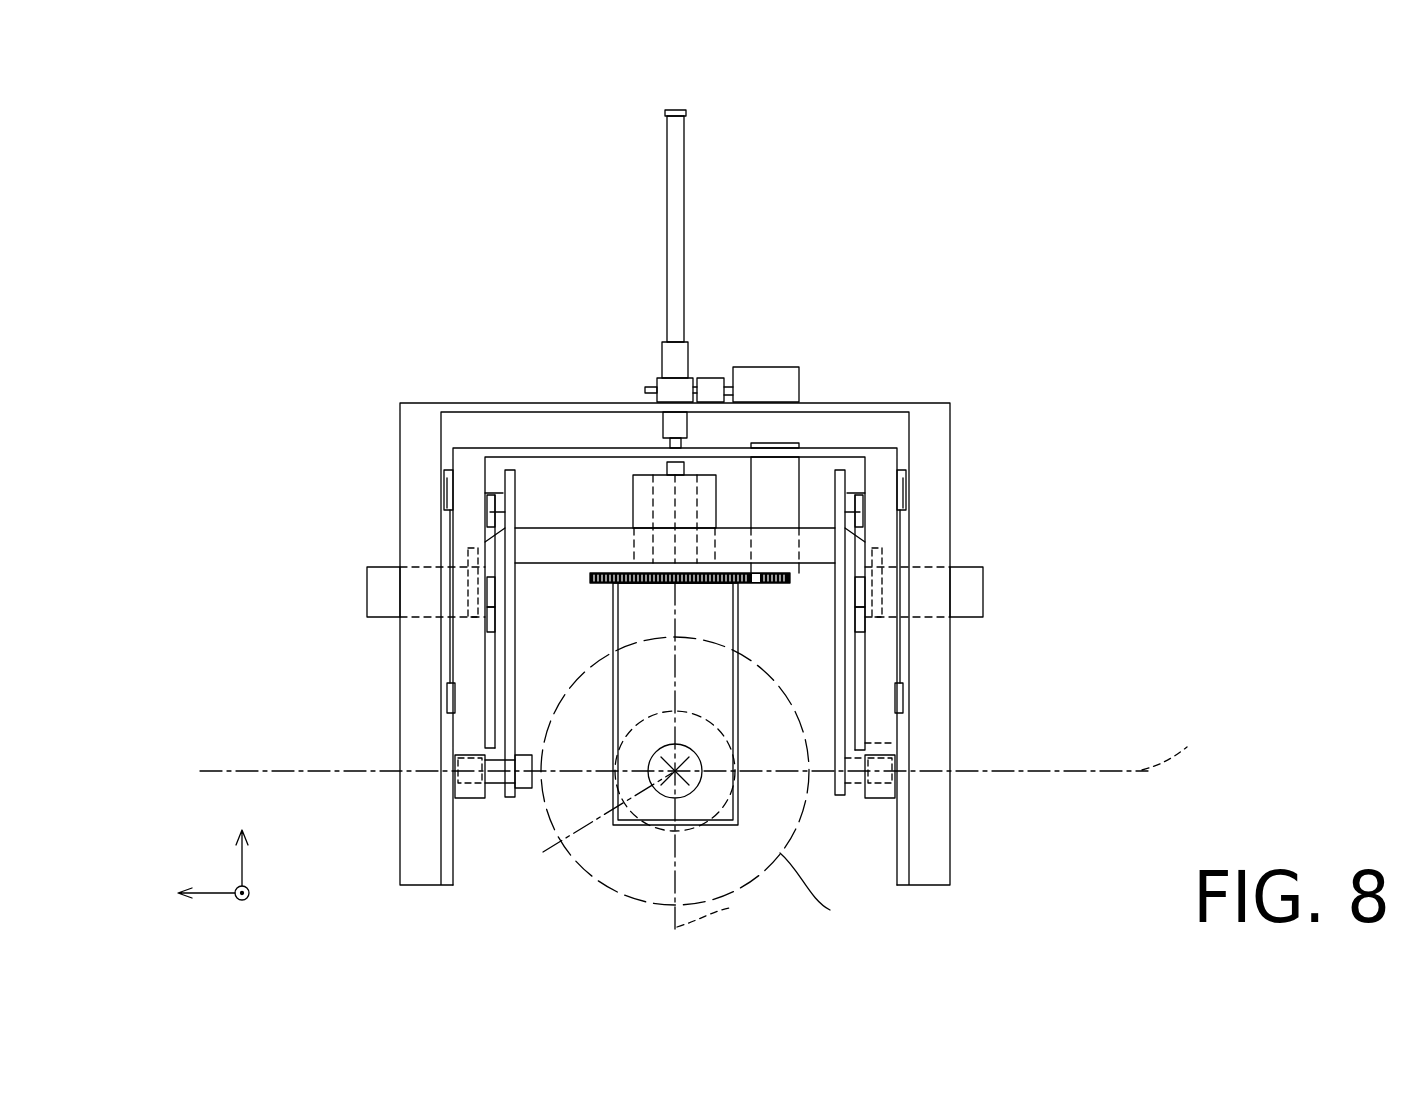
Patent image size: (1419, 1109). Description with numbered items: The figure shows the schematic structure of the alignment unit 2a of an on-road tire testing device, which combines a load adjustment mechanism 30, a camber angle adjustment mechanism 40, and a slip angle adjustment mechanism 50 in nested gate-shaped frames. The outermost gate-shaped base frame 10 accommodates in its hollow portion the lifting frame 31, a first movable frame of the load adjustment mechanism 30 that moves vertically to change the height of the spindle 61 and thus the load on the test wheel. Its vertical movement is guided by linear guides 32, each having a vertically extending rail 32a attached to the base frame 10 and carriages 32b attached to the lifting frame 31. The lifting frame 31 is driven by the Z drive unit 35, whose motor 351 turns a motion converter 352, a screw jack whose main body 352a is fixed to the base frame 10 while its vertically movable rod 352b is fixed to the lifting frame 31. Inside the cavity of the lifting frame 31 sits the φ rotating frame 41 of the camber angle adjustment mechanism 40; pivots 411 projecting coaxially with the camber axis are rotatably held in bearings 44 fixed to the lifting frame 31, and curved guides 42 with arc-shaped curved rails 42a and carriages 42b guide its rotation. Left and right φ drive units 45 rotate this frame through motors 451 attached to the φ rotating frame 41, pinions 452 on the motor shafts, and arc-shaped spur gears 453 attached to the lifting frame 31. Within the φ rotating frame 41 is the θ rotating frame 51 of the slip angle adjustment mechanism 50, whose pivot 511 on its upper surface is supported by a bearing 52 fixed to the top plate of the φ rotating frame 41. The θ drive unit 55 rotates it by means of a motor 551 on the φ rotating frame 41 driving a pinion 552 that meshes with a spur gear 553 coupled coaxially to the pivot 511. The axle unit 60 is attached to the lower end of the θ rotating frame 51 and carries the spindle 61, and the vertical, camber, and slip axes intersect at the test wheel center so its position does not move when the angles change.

The alignment unit 2a is at (976, 210).
The base frame 10 is at (487, 402).
The load adjustment mechanism 30 is at (675, 581).
The lifting frame 31 is at (588, 446).
The linear guide 32 is at (546, 611).
The rail 32a is at (443, 633).
The carriage 32b is at (447, 702).
The Z drive unit 35 is at (767, 279).
The motor 351 is at (760, 367).
The motion converter 352 is at (744, 279).
The main body 352a is at (692, 358).
The rod 352b is at (690, 427).
The camber angle adjustment mechanism 40 is at (537, 690).
The φ rotating frame 41 is at (582, 563).
The pivot 411 is at (490, 786).
The curved guide 42 is at (537, 521).
The curved rail 42a is at (488, 528).
The carriage 42b is at (495, 483).
The bearing 44 is at (480, 743).
The φ drive unit 45 is at (764, 646).
The motor 451 is at (984, 590).
The pinion 452 is at (862, 596).
The spur gear 453 is at (865, 627).
The slip angle adjustment mechanism 50 is at (873, 756).
The θ rotating frame 51 is at (737, 643).
The pivot 511 is at (653, 487).
The bearing 52 is at (632, 500).
The θ drive unit 55 is at (831, 413).
The motor 551 is at (770, 573).
The pinion 552 is at (800, 480).
The spur gear 553 is at (720, 573).
The axle unit 60 is at (725, 790).
The spindle 61 is at (690, 743).